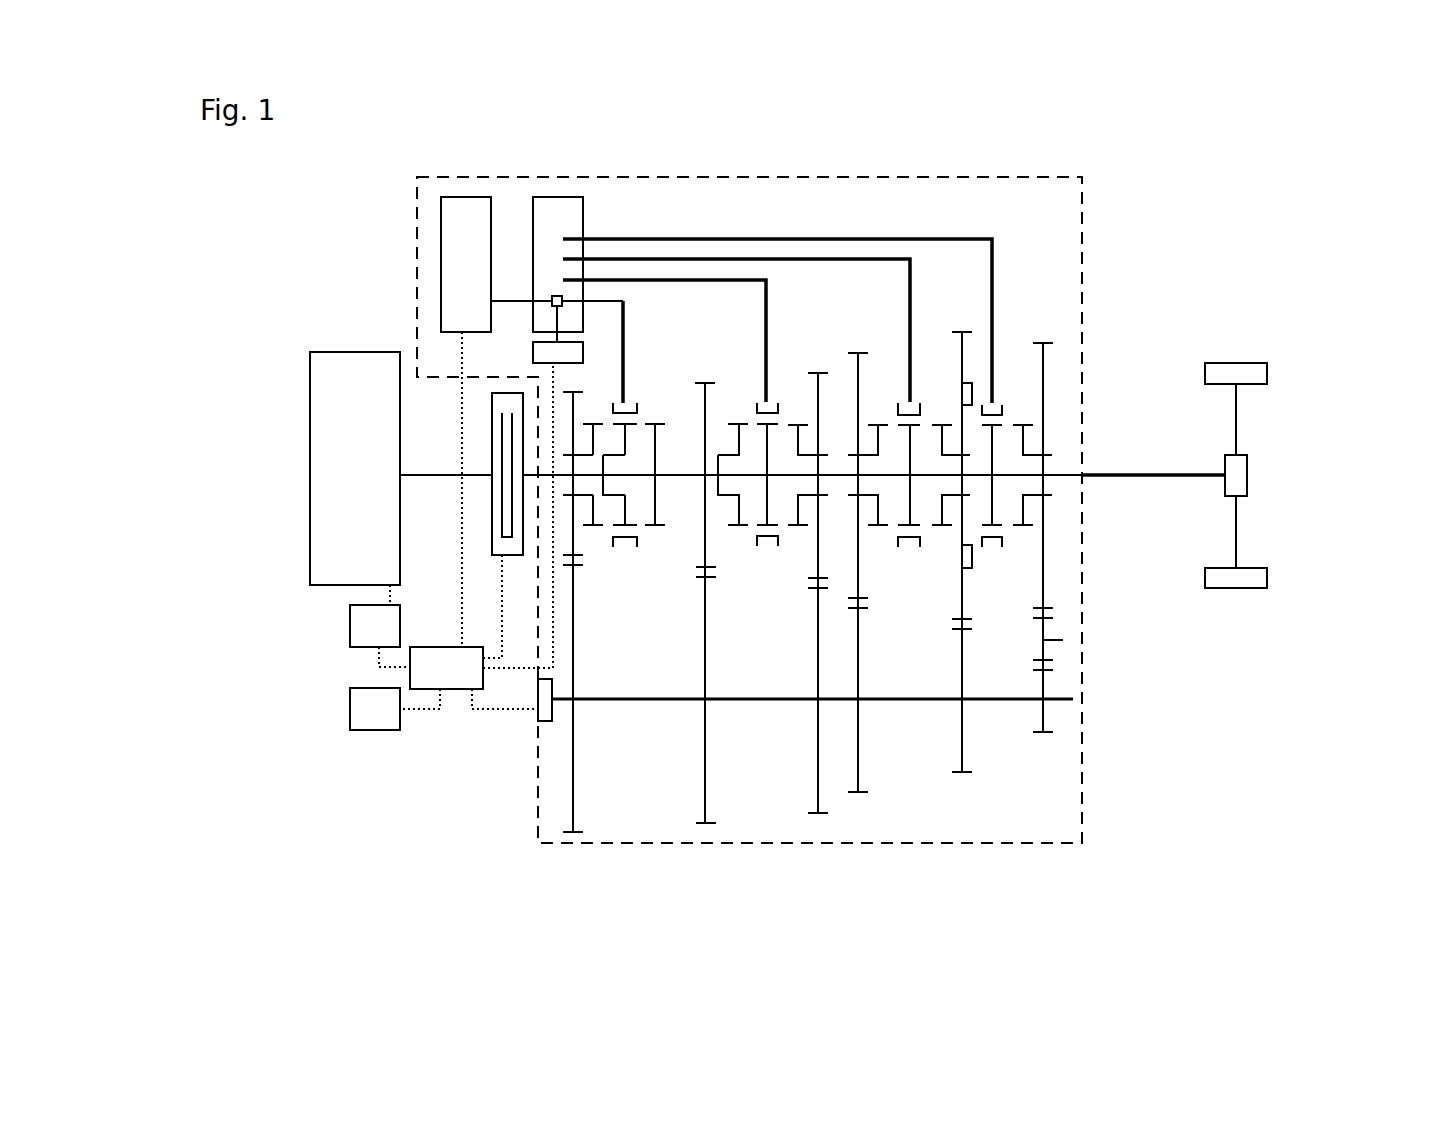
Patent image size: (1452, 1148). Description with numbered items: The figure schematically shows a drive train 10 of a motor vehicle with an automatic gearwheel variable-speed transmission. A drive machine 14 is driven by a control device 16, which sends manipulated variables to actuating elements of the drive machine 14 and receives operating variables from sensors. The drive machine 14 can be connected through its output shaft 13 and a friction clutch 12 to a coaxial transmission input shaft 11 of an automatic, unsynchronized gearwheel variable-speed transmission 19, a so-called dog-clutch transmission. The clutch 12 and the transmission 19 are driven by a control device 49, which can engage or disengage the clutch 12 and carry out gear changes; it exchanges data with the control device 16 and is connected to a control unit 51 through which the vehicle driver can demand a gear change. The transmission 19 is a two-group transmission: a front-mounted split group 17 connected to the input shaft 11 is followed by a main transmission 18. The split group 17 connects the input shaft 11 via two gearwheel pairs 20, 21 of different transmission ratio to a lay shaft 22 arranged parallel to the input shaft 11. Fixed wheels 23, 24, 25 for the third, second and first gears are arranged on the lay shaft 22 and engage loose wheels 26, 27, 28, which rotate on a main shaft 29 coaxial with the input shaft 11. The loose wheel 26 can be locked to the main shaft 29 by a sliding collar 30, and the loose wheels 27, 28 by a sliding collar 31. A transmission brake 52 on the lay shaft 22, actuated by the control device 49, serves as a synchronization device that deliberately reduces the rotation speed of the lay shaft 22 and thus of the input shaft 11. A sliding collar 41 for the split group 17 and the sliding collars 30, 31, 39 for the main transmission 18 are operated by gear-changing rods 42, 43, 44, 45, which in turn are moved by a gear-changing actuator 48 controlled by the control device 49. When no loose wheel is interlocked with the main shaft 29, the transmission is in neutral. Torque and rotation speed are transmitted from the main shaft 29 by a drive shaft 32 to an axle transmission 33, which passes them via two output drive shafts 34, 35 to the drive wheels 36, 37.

The drive train 10 is at (1347, 158).
The transmission input shaft 11 is at (532, 478).
The friction clutch 12 is at (412, 473).
The output shaft 13 is at (492, 412).
The drive machine 14 is at (319, 384).
The control device 16 is at (361, 641).
The split group 17 is at (645, 378).
The main transmission 18 is at (930, 318).
The gearwheel variable-speed transmission 19 is at (482, 157).
The gearwheel pair 20 is at (575, 837).
The gearwheel pair 21 is at (707, 825).
The lay shaft 22 is at (1063, 702).
The fixed wheel 23 is at (818, 815).
The fixed wheel 24 is at (860, 795).
The fixed wheel 25 is at (965, 775).
The loose wheel 26 is at (817, 373).
The loose wheel 27 is at (859, 353).
The loose wheel 28 is at (961, 332).
The main shaft 29 is at (1063, 473).
The sliding collar 30 is at (779, 400).
The sliding collar 31 is at (921, 404).
The drive shaft 32 is at (1098, 478).
The axle transmission 33 is at (1247, 475).
The output drive shaft 34 is at (1237, 435).
The output drive shaft 35 is at (1237, 527).
The drive wheel 36 is at (1267, 372).
The drive wheel 37 is at (1267, 577).
The sliding collar 39 is at (981, 548).
The sliding collar 41 is at (613, 546).
The gear-changing rod 42 is at (599, 300).
The gear-changing rod 43 is at (613, 280).
The gear-changing rod 44 is at (645, 260).
The gear-changing rod 45 is at (737, 238).
The gear-changing actuator 48 is at (452, 232).
The control device 49 is at (433, 681).
The control unit 51 is at (361, 724).
The transmission brake 52 is at (540, 722).